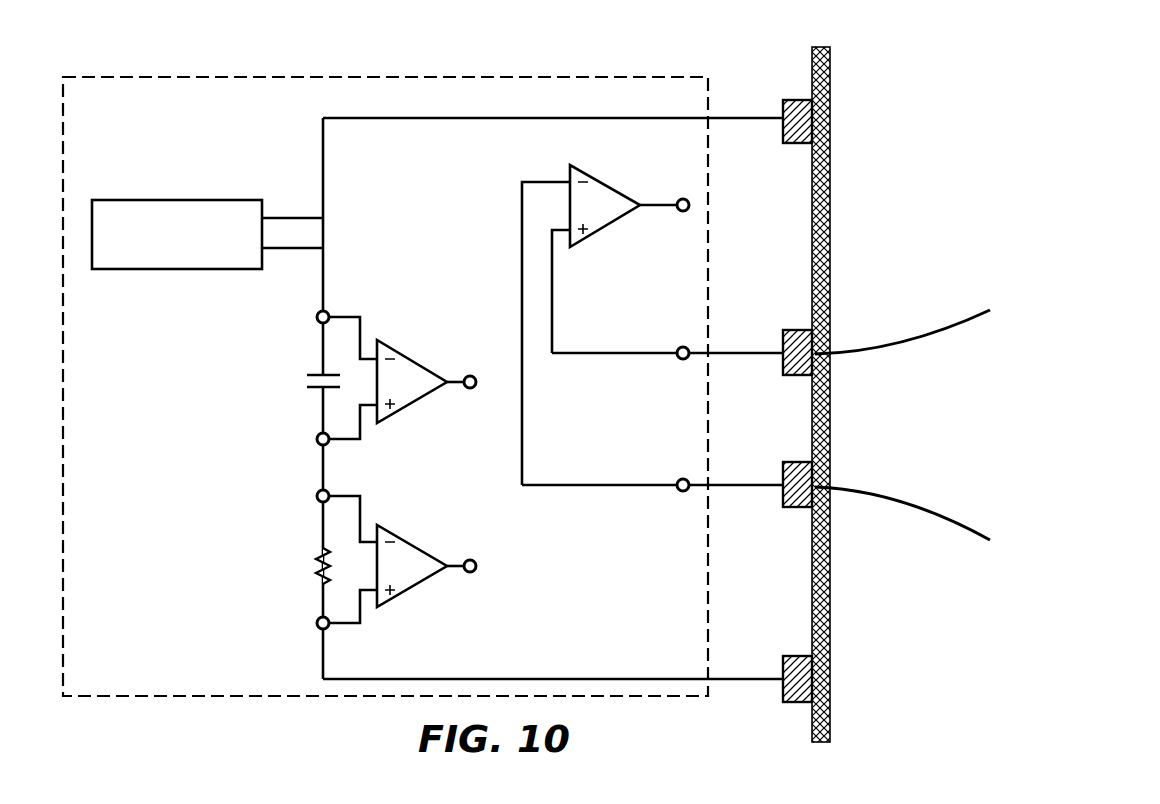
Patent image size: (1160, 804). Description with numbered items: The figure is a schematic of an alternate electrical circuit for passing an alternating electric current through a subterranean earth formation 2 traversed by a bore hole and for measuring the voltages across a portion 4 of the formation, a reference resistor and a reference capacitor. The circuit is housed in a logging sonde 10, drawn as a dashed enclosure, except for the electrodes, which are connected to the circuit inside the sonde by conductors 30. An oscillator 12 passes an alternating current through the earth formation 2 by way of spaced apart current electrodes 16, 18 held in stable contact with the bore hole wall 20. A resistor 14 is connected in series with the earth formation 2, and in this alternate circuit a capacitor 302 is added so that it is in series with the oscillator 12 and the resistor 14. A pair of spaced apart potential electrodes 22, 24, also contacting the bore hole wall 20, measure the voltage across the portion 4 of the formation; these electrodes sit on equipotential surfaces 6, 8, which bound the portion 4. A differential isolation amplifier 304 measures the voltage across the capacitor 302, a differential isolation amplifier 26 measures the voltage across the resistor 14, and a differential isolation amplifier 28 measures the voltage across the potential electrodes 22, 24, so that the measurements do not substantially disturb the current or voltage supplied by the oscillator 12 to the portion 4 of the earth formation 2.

The logging sonde 10 is at (357, 61).
The oscillator 12 is at (207, 222).
The capacitor 302 is at (256, 368).
The differential isolation amplifier 304 is at (399, 378).
The resistor 14 is at (300, 566).
The differential isolation amplifier 26 is at (400, 559).
The differential isolation amplifier 28 is at (609, 321).
The conductors 30 is at (604, 118).
The current electrode 16 is at (769, 119).
The potential electrode 22 is at (769, 352).
The potential electrode 24 is at (769, 484).
The current electrode 18 is at (769, 679).
The bore hole wall 20 is at (814, 48).
The earth formation 2 is at (893, 140).
The portion of the earth formation 4 is at (912, 432).
The equipotential surface 6 is at (922, 338).
The equipotential surface 8 is at (925, 520).